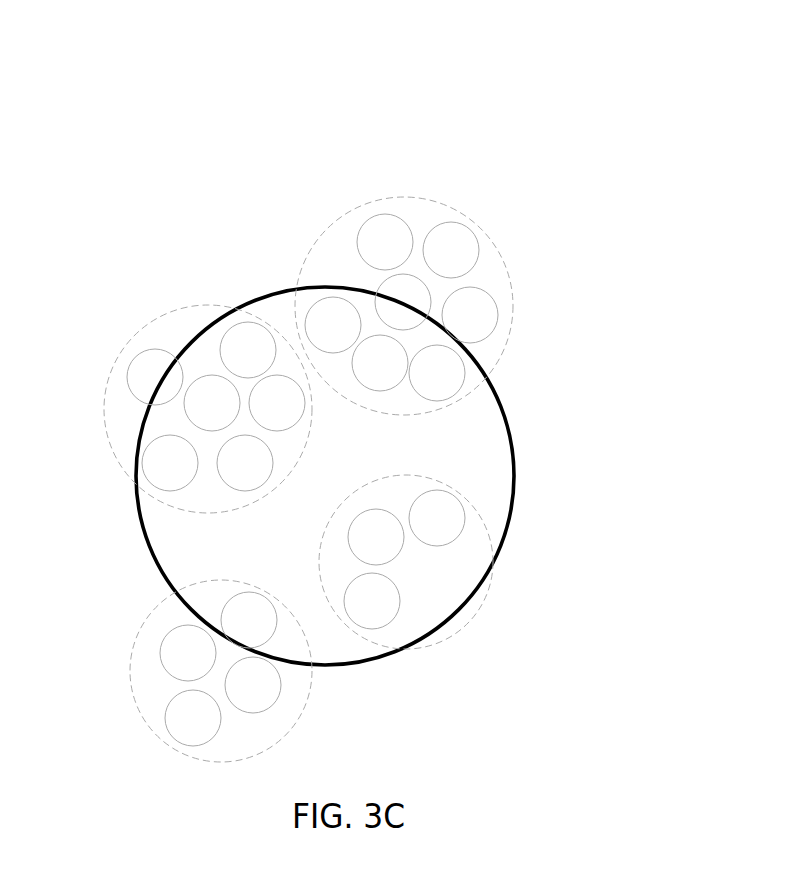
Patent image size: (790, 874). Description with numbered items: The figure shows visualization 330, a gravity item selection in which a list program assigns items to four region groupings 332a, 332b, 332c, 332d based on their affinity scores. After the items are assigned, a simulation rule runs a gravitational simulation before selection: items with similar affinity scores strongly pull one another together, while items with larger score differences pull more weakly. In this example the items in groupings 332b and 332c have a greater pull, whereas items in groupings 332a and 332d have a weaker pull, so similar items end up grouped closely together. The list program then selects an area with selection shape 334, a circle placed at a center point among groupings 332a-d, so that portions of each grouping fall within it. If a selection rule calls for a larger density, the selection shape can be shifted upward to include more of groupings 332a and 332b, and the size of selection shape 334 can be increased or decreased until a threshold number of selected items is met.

The visualization 330 is at (371, 383).
The grouping 332a is at (355, 210).
The grouping 332b is at (180, 310).
The grouping 332c is at (477, 613).
The grouping 332d is at (130, 653).
The selection shape 334 is at (513, 448).